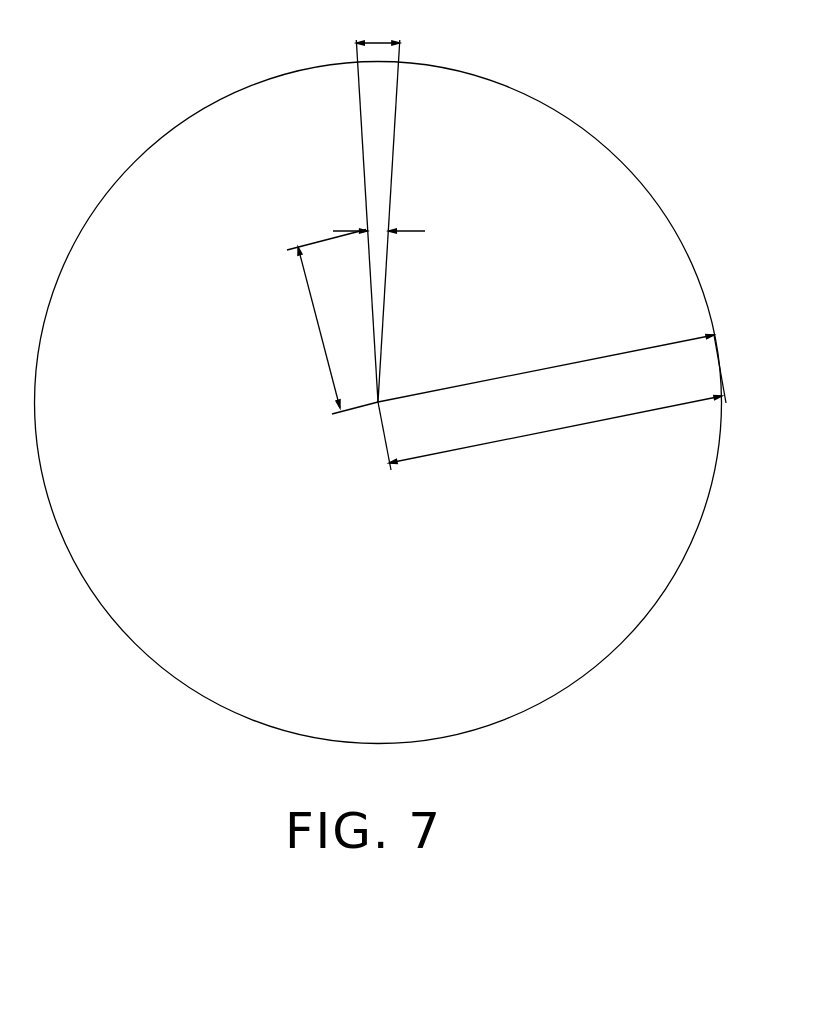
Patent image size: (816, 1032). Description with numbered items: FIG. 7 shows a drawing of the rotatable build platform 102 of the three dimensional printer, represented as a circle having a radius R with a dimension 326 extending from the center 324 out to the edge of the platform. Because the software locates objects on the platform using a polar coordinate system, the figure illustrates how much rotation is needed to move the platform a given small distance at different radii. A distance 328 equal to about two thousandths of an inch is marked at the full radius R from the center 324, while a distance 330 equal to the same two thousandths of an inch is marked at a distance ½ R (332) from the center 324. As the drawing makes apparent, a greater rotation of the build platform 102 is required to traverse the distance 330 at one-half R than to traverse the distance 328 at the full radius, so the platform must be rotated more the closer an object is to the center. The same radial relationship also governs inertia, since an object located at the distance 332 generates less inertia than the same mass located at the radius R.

The build platform 102 is at (358, 610).
The center 324 is at (378, 402).
The dimension 326 is at (562, 434).
The distance 328 is at (380, 42).
The distance 330 is at (416, 236).
The distance ½ R 332 is at (318, 332).
The radius R is at (590, 360).